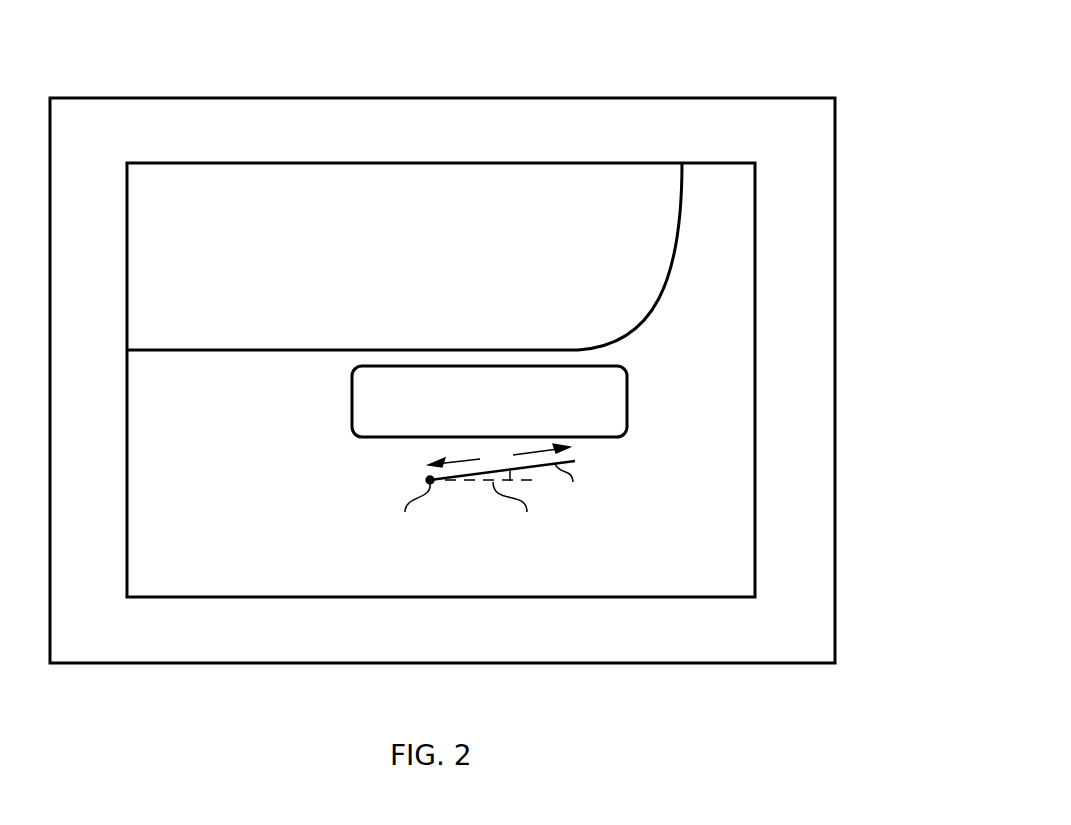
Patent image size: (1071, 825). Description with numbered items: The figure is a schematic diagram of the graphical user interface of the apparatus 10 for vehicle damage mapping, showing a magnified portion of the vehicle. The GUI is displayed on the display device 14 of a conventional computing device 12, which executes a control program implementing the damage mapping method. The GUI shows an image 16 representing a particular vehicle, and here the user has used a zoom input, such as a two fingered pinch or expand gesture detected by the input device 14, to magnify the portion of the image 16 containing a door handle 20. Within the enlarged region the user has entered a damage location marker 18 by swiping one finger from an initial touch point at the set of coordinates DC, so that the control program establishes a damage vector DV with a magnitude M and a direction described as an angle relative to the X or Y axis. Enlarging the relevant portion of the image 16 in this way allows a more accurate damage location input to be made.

The apparatus 10 is at (489, 350).
The computing device 12 is at (835, 282).
The display device 14 is at (757, 252).
The image 16 is at (735, 377).
The damage location marker 18 is at (570, 527).
The door handle 20 is at (453, 392).